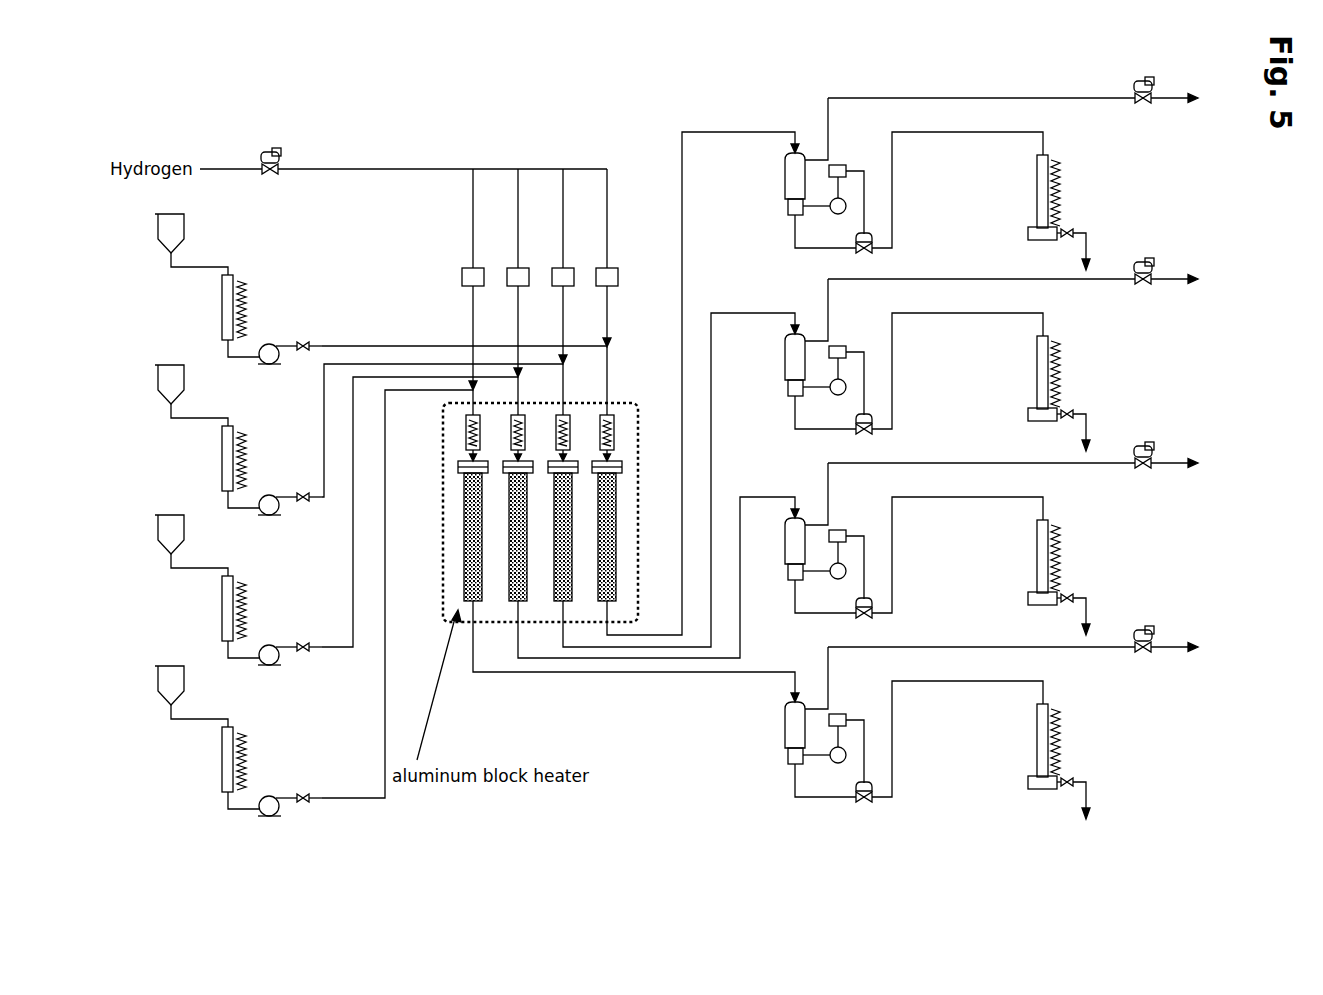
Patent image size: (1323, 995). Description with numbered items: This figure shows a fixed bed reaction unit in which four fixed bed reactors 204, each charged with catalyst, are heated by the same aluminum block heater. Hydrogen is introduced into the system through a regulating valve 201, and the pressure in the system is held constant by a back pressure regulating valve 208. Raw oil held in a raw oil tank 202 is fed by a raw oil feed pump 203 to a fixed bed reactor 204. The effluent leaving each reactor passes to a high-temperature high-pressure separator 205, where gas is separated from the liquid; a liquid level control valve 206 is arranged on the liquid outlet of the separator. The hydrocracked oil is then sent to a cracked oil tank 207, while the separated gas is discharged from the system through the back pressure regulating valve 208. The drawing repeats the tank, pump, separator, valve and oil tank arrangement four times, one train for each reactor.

The regulating valve 201 is at (346, 152).
The raw oil tank 202 is at (242, 679).
The raw oil feed pump 203 is at (348, 830).
The fixed bed reactor 204 is at (551, 568).
The high-temperature high-pressure separator 205 is at (709, 764).
The liquid level control valve 206 is at (887, 823).
The cracked oil tank 207 is at (1125, 785).
The back pressure regulating valve 208 is at (1152, 686).